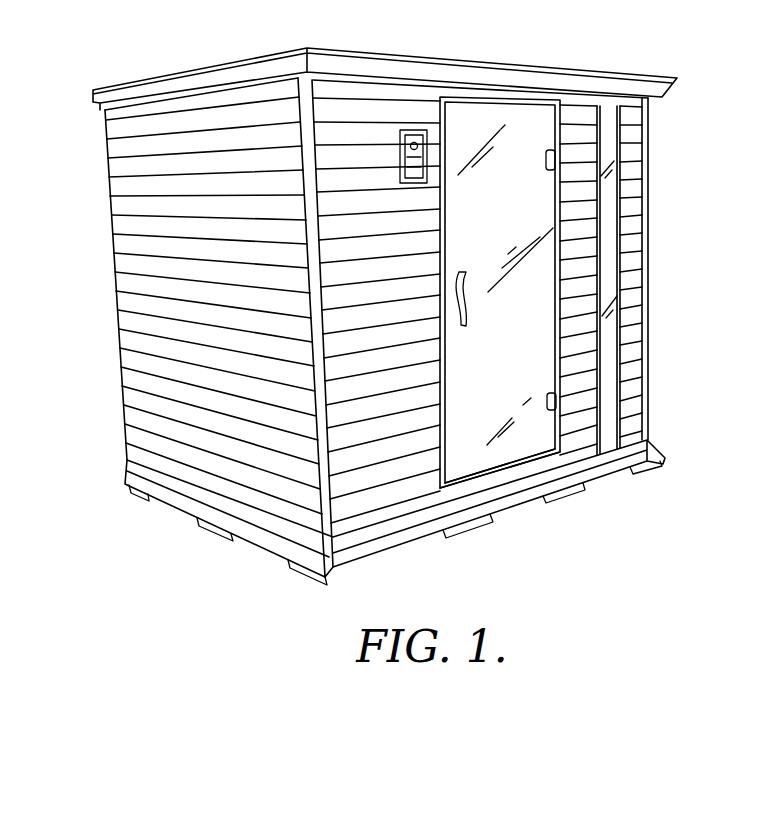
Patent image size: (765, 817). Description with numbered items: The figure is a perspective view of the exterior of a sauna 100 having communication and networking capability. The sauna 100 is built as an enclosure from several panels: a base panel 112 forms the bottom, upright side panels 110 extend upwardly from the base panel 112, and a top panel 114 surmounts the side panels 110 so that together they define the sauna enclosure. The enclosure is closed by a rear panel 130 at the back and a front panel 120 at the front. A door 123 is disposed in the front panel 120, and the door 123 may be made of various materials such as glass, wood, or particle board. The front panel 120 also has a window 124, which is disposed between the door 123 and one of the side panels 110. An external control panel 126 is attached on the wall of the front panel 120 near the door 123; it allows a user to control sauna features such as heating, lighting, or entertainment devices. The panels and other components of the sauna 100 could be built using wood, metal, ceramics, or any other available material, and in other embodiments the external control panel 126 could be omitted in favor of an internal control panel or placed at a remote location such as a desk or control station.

The sauna 100 is at (94, 442).
The upright side panels 110 is at (150, 310).
The base panel 112 is at (277, 543).
The top panel 114 is at (548, 72).
The front panel 120 is at (425, 482).
The door 123 is at (510, 457).
The window 124 is at (613, 378).
The external control panel 126 is at (414, 130).
The rear panel 130 is at (107, 172).